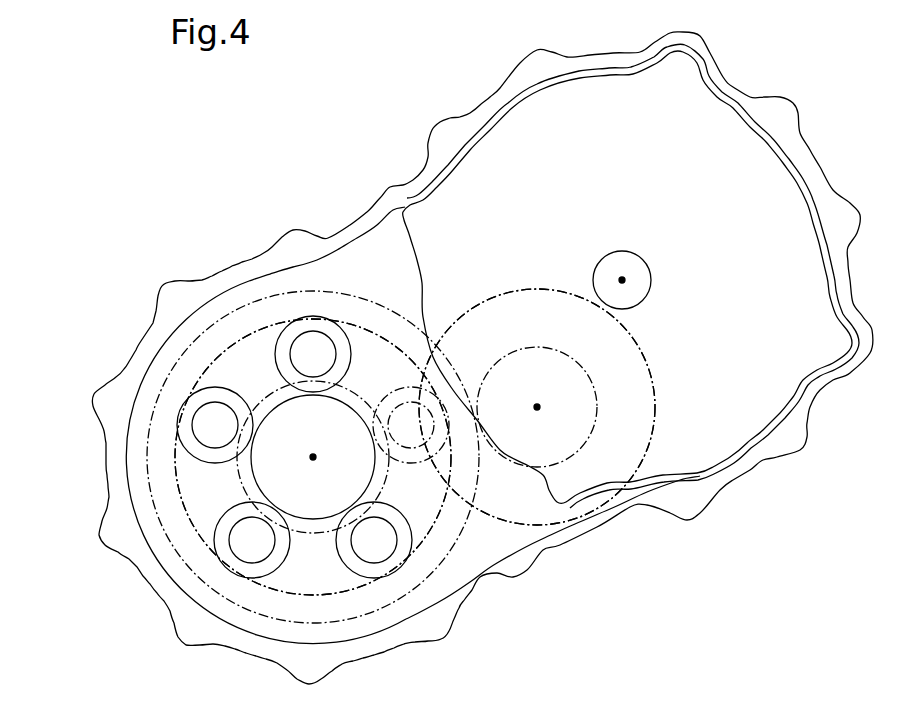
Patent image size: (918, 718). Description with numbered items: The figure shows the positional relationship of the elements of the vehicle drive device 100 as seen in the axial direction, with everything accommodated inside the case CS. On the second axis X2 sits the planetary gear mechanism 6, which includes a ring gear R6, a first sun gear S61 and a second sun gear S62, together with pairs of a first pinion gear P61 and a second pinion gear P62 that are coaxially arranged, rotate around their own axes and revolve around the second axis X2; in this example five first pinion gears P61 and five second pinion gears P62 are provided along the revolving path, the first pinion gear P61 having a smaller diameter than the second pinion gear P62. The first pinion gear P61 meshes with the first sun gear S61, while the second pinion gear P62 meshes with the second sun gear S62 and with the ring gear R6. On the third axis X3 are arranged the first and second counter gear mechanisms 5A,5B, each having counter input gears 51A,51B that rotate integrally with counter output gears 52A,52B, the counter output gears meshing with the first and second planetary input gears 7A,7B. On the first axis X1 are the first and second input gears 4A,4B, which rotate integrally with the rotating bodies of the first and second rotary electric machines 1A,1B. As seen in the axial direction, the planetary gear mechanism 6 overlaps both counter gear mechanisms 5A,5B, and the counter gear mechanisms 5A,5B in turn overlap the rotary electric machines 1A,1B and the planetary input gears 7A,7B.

The vehicle drive device 100 is at (165, 158).
The case CS is at (508, 92).
The first and second rotary electric machines 1A,1B is at (707, 123).
The first and second input gears 4A,4B is at (620, 251).
The first axis X1 is at (624, 278).
The second axis X2 is at (313, 454).
The third axis X3 is at (538, 404).
The first and second counter input gears 51A,51B is at (641, 340).
The first and second counter output gears 52A,52B is at (598, 393).
The first and second counter gear mechanisms 5A,5B is at (662, 423).
The planetary gear mechanism 6 is at (205, 355).
The first and second planetary input gears 7A,7B is at (315, 290).
The first pinion gear P61 is at (284, 352).
The second pinion gear P62 is at (288, 330).
The first sun gear S61 is at (256, 484).
The second sun gear S62 is at (250, 487).
The ring gear R6 is at (190, 523).